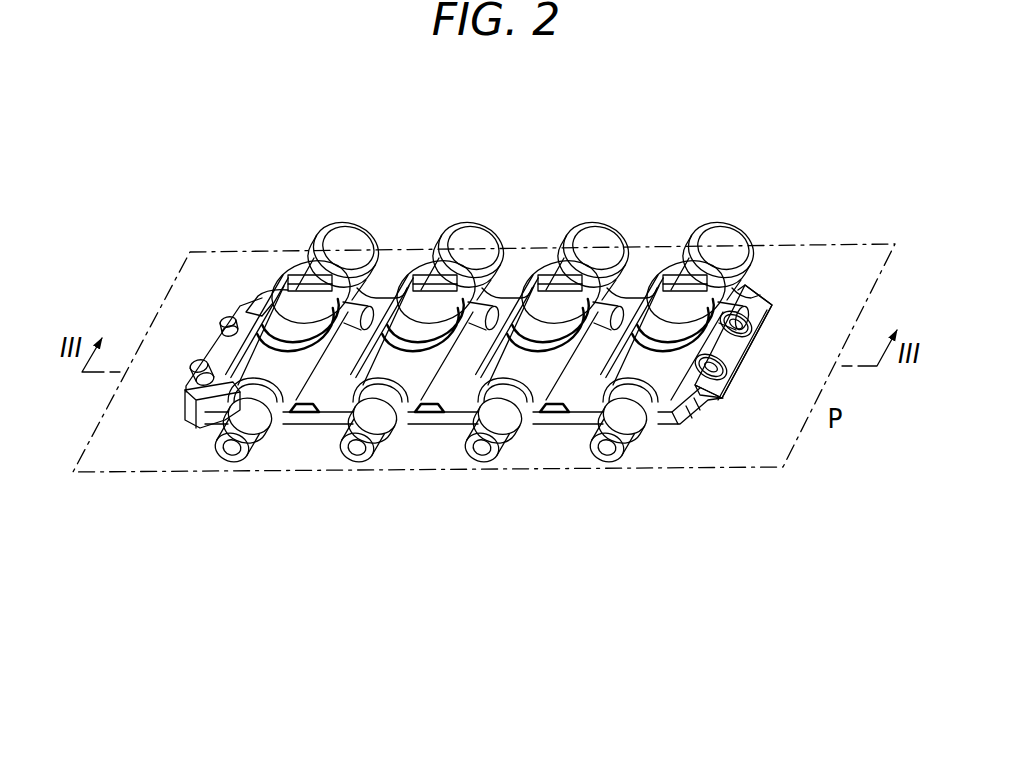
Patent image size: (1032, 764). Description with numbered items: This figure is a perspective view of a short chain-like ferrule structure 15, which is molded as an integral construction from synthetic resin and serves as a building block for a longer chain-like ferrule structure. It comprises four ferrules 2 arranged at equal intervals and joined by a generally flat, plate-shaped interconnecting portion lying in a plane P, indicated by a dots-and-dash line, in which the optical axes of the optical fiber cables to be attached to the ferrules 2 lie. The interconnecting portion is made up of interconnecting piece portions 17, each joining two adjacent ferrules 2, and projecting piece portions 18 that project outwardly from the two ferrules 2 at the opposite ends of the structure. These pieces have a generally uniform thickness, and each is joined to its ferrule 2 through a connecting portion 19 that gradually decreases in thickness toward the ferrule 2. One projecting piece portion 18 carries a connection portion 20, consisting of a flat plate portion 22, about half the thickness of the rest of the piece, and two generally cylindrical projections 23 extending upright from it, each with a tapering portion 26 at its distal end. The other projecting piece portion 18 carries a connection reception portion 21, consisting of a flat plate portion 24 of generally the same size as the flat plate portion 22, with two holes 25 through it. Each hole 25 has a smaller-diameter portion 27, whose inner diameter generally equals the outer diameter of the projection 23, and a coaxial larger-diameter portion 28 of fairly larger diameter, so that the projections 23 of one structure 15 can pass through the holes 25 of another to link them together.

The ferrule 2 is at (348, 220).
The short chain-like ferrule structure 15 is at (560, 160).
The interconnecting piece portion 17 is at (295, 426).
The projecting piece portion 18 is at (190, 423).
The connecting portion 19 is at (316, 258).
The connection portion 20 is at (243, 310).
The connection reception portion 21 is at (758, 302).
The flat plate portion 22 is at (220, 318).
The projection 23 is at (196, 390).
The flat plate portion 24 is at (738, 343).
The hole 25 is at (727, 380).
The tapering portion 26 is at (196, 362).
The smaller-diameter portion 27 is at (752, 336).
The larger-diameter portion 28 is at (758, 318).